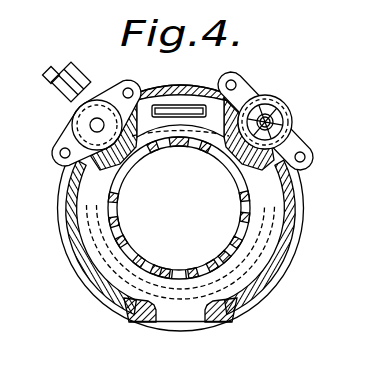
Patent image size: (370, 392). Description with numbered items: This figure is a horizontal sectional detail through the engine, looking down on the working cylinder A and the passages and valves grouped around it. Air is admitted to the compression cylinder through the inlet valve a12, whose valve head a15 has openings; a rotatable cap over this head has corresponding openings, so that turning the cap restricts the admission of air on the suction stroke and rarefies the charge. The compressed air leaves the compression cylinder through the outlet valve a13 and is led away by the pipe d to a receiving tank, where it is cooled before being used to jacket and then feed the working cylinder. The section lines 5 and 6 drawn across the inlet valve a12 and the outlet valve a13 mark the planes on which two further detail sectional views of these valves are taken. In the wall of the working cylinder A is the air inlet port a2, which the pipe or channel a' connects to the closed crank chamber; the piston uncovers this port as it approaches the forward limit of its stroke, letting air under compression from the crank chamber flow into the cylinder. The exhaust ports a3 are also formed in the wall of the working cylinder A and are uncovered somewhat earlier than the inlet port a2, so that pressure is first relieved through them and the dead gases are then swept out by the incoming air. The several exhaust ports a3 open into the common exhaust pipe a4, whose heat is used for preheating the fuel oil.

The section line 6— 6 is at (57, 92).
The pipe d is at (62, 72).
The outlet valve a13 is at (90, 125).
The pipe or channel a' is at (180, 97).
The section line 5— 5 is at (297, 96).
The inlet valve a12 is at (284, 121).
The valve head a15 is at (290, 131).
The air inlet port a2 is at (180, 142).
The working cylinder A is at (179, 208).
The exhaust ports a3 is at (224, 254).
The common exhaust pipe a4 is at (184, 321).